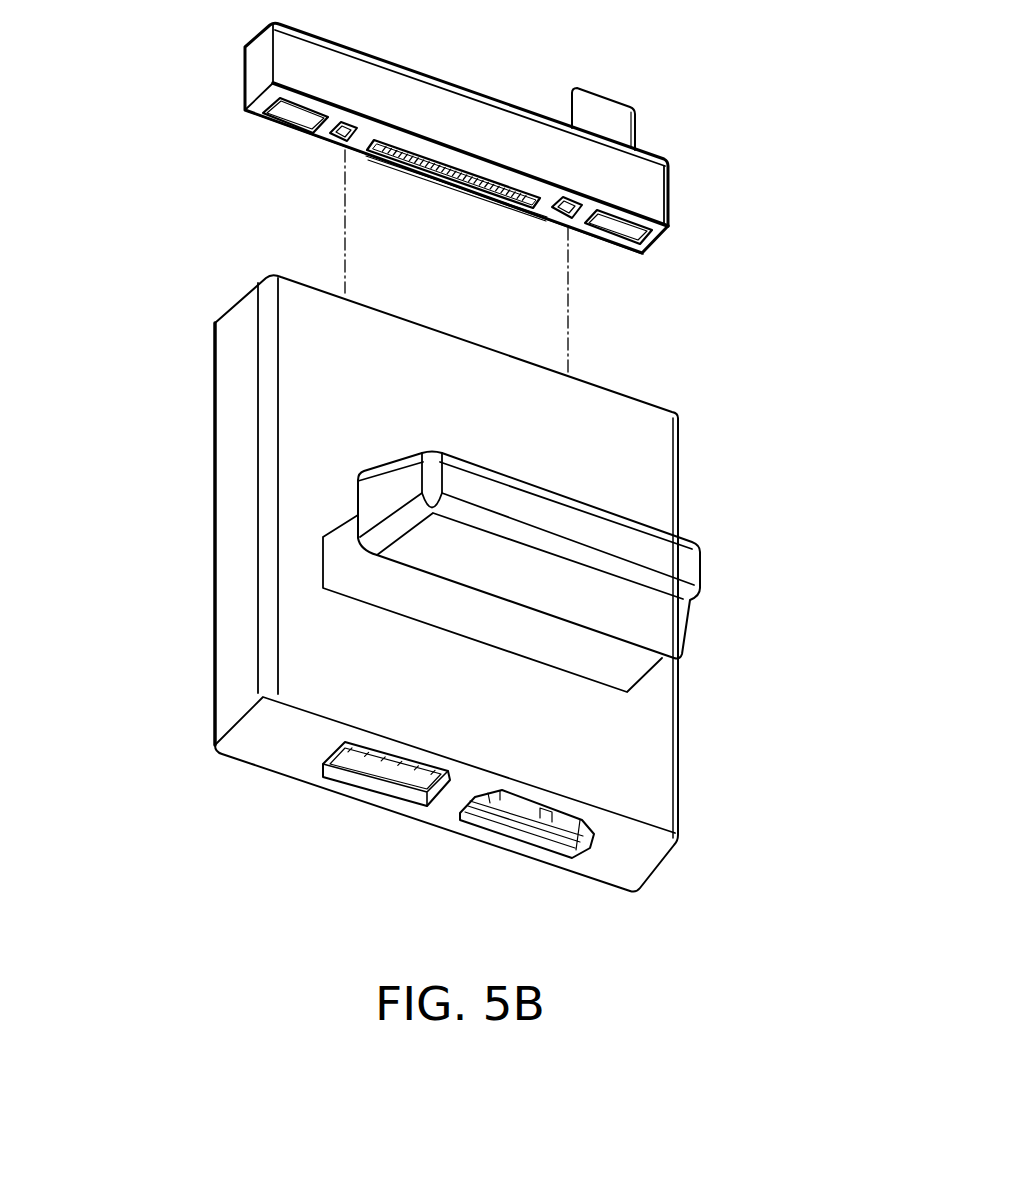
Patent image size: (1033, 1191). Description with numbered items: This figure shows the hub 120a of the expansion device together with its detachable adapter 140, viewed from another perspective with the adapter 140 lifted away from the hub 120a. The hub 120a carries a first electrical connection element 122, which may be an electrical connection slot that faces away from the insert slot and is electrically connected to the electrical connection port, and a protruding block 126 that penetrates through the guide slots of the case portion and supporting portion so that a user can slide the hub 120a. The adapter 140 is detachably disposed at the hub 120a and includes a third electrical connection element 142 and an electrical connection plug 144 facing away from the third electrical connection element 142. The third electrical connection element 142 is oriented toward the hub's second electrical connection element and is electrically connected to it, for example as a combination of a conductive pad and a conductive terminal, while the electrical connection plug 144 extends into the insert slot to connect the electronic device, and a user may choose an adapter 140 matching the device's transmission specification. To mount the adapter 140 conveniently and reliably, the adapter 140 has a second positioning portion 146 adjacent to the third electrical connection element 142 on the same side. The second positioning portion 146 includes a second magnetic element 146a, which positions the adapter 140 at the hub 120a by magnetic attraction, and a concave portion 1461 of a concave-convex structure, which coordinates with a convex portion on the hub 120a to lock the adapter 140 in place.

The hub 120a is at (434, 585).
The first electrical connection element 122 is at (396, 768).
The protruding block 126 is at (558, 555).
The adapter 140 is at (410, 151).
The third electrical connection element 142 is at (447, 182).
The electrical connection plug 144 is at (610, 120).
The second positioning portion 146 is at (206, 146).
The second magnetic element 146a is at (287, 114).
The concave portion 1461 is at (340, 143).